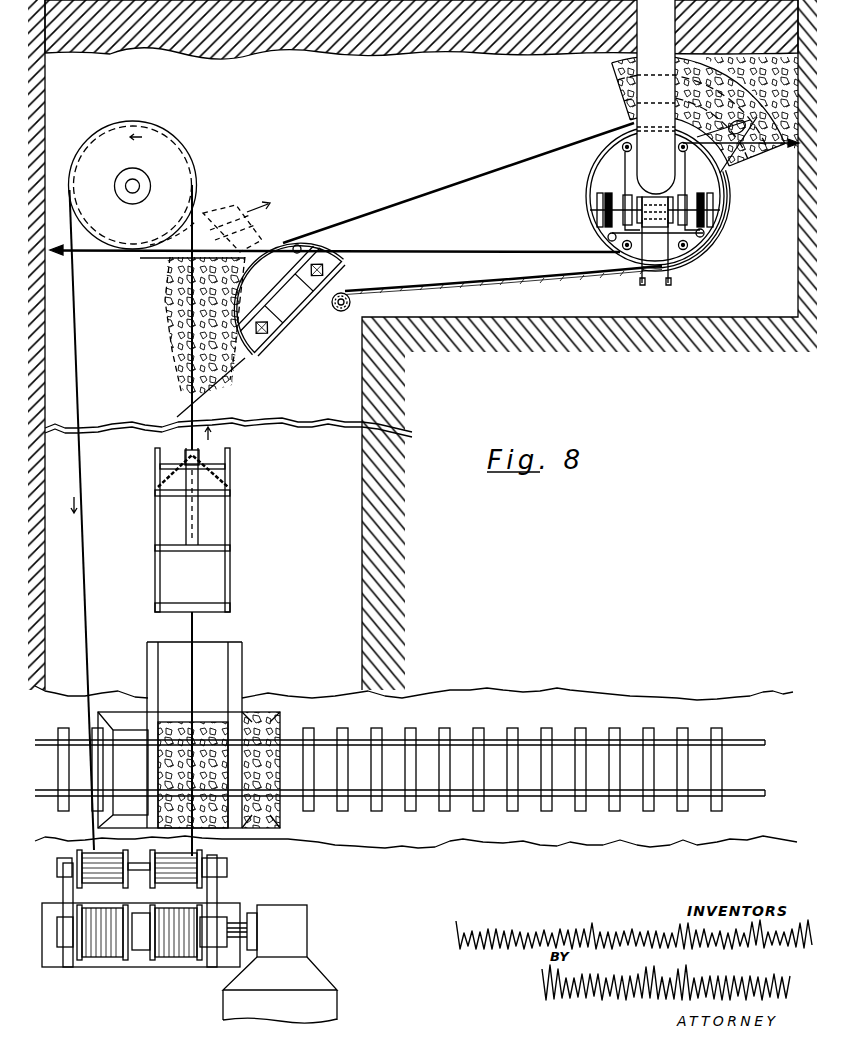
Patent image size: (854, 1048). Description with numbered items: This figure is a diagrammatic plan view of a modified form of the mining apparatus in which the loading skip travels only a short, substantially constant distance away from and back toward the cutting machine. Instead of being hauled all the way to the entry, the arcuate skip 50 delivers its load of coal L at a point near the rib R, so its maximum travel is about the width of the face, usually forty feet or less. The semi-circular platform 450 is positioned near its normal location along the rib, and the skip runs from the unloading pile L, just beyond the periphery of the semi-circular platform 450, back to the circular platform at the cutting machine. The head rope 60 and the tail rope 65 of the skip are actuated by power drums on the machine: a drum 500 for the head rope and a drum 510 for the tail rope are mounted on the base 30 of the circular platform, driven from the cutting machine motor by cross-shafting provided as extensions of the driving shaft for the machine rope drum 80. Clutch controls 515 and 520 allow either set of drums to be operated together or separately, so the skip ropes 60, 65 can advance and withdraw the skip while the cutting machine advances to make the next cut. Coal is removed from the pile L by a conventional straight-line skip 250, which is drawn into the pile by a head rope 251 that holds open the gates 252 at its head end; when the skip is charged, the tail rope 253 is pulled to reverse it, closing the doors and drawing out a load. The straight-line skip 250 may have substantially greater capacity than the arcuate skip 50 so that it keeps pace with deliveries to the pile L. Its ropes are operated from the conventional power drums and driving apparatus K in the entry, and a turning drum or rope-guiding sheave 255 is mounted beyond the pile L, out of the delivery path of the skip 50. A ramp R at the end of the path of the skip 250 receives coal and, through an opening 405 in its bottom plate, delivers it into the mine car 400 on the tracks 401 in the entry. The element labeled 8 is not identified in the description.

The turning drum or rope-guiding sheave 255 is at (170, 157).
The arcuate skip 50 is at (218, 210).
The semi-circular platform 450 is at (298, 246).
The tail rope 65 is at (471, 182).
The base of the circular platform 30 is at (598, 172).
The pulley 8 is at (621, 198).
The machine rope drum 80 is at (693, 199).
The drum for the head rope 500 is at (597, 201).
The drum for the tail rope 510 is at (727, 206).
The clutch control 515 is at (676, 280).
The clutch control 520 is at (645, 286).
The head rope 60 is at (565, 280).
The rib / ramp R is at (47, 338).
The pile of loaded-out coal L is at (224, 366).
The head rope 251 is at (193, 413).
The gates 252 is at (232, 472).
The straight-line skip 250 is at (235, 511).
The tail rope 253 is at (195, 633).
The opening in the ramp bottom plate 405 is at (168, 712).
The mine car 400 is at (278, 737).
The tracks 401 is at (430, 738).
The power drums and driving apparatus K is at (235, 907).